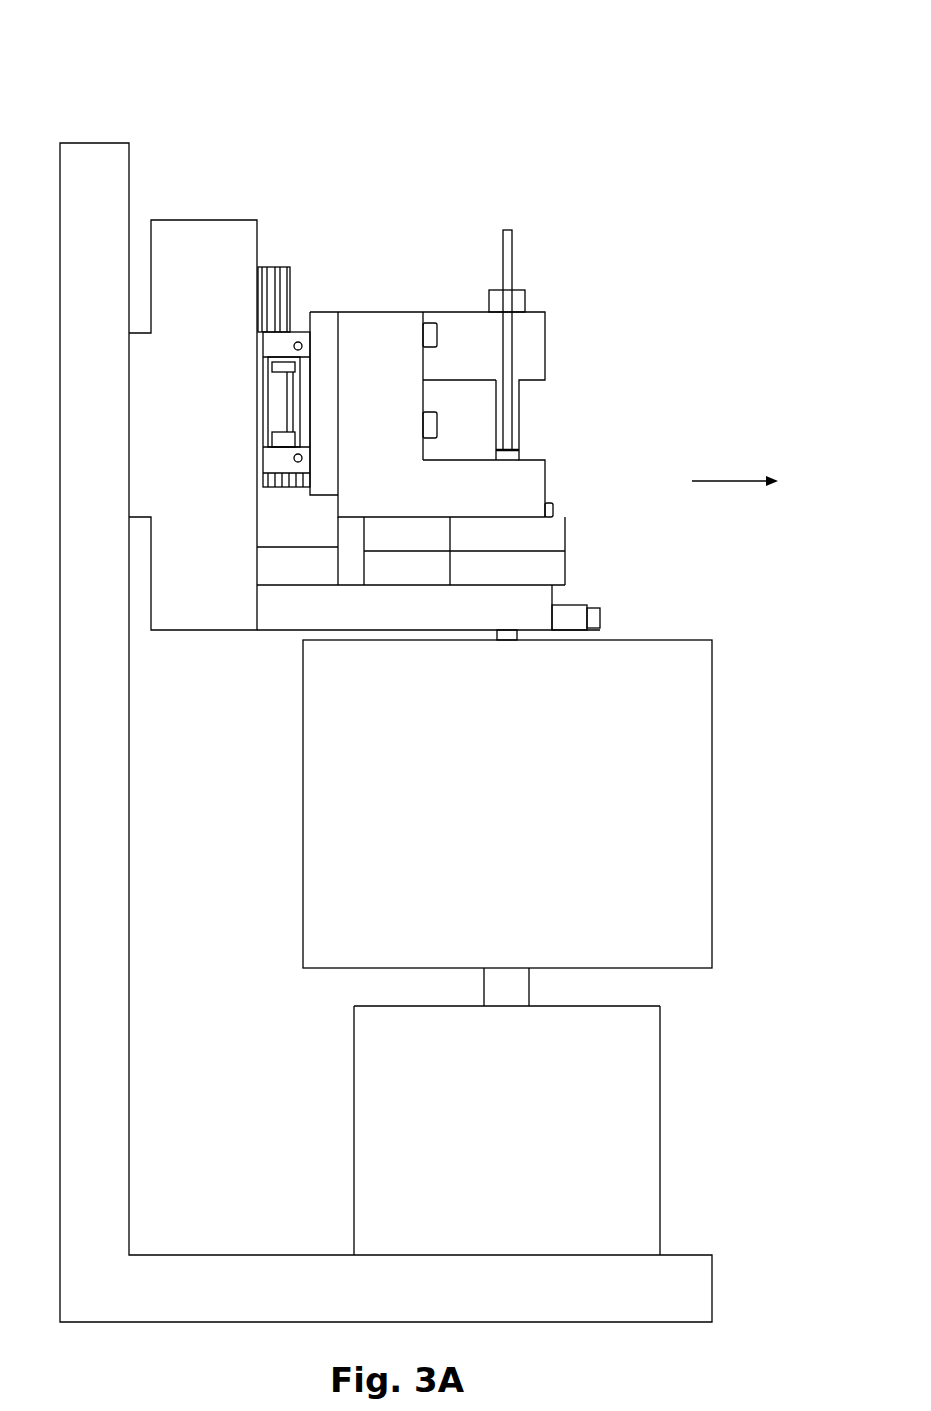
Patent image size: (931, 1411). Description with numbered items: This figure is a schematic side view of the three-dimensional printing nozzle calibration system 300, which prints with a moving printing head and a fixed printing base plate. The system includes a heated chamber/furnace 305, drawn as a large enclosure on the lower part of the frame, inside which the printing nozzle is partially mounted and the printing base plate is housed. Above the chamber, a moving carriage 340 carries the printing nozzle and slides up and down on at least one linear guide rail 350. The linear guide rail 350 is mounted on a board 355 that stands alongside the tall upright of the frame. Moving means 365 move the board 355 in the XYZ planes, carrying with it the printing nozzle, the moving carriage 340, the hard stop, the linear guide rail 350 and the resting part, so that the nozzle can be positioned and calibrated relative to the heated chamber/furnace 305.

The 3D printing nozzle calibration system 300 is at (571, 108).
The heated chamber/furnace 305 is at (712, 784).
The moving carriage 340 is at (392, 322).
The linear guide rail 350 is at (278, 265).
The board 355 is at (208, 227).
The moving means 365 is at (140, 342).